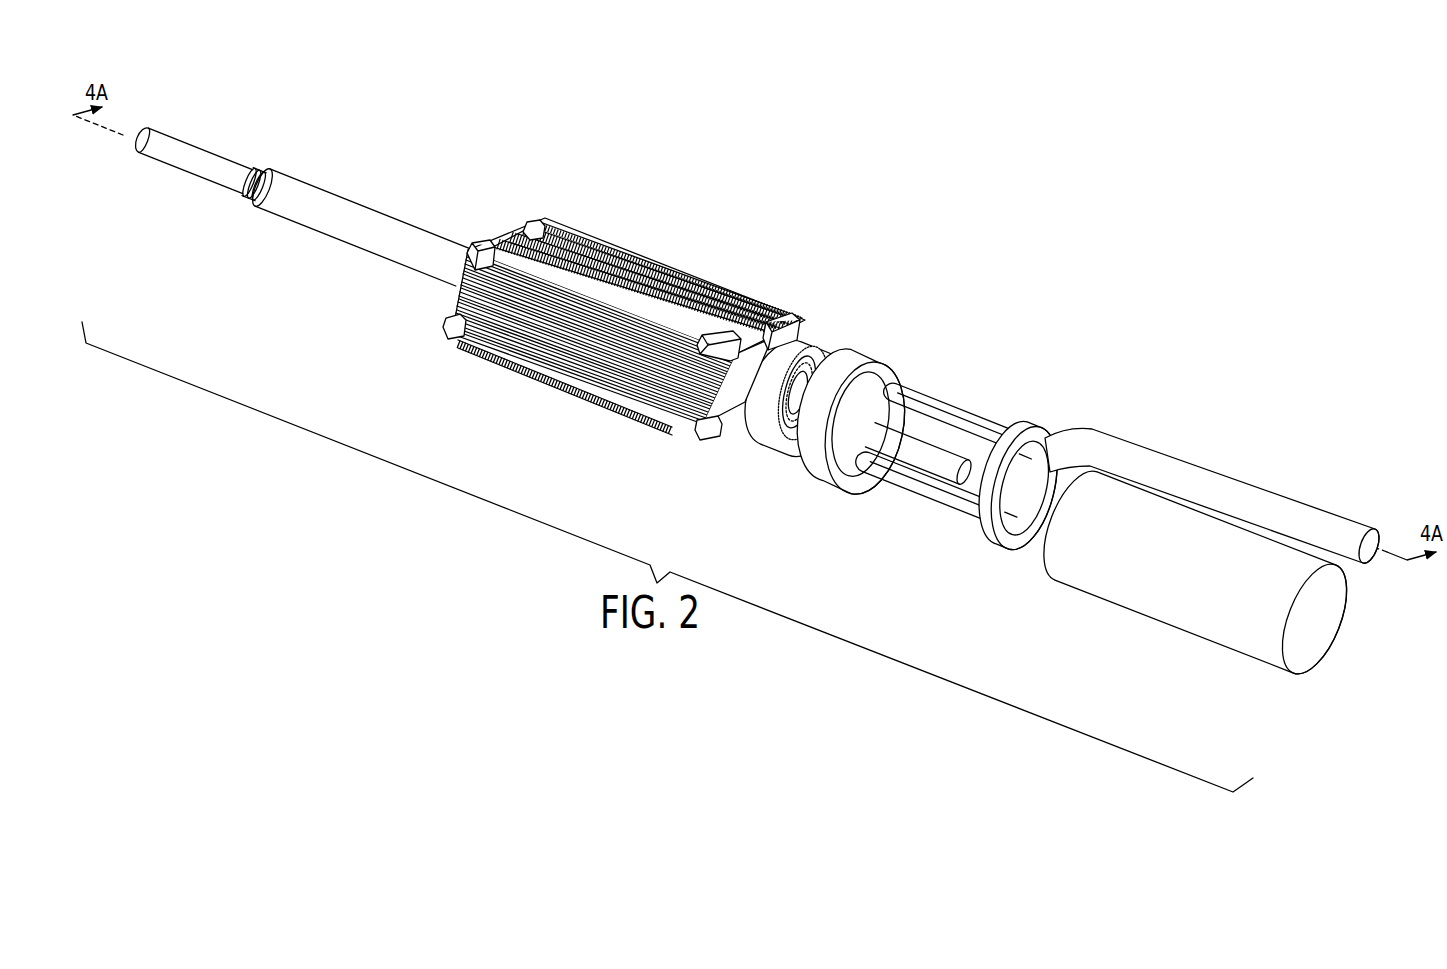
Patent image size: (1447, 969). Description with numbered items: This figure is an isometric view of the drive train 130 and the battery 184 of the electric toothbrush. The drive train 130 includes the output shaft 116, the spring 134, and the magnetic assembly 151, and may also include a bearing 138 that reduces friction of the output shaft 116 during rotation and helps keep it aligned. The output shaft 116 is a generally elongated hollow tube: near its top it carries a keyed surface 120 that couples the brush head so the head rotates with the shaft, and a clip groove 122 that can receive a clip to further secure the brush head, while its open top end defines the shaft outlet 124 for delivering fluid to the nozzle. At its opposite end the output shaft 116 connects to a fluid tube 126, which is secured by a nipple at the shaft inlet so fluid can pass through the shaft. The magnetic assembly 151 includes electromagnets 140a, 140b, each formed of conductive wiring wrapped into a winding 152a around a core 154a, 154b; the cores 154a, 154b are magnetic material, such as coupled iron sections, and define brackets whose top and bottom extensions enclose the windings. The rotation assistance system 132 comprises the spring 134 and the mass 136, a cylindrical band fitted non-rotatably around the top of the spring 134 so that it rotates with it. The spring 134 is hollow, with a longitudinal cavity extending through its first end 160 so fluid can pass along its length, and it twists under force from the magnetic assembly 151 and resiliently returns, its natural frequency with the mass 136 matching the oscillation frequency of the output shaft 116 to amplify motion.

The output shaft 116 is at (374, 211).
The keyed surface 120 is at (173, 147).
The clip groove 122 is at (271, 172).
The shaft outlet 124 is at (130, 124).
The fluid tube 126 is at (1225, 478).
The drive train 130 is at (621, 328).
The rotation assistance system 132 is at (926, 445).
The spring 134 is at (923, 400).
The mass 136 is at (854, 358).
The bearing 138 is at (806, 344).
The first electromagnet 140a is at (468, 325).
The second electromagnet 140b is at (781, 320).
The magnetic assembly 151 is at (737, 452).
The winding 152a is at (550, 345).
The first core 154a is at (664, 438).
The second core 154b is at (651, 261).
The first end of the spring 160 is at (990, 534).
The battery 184 is at (1173, 633).